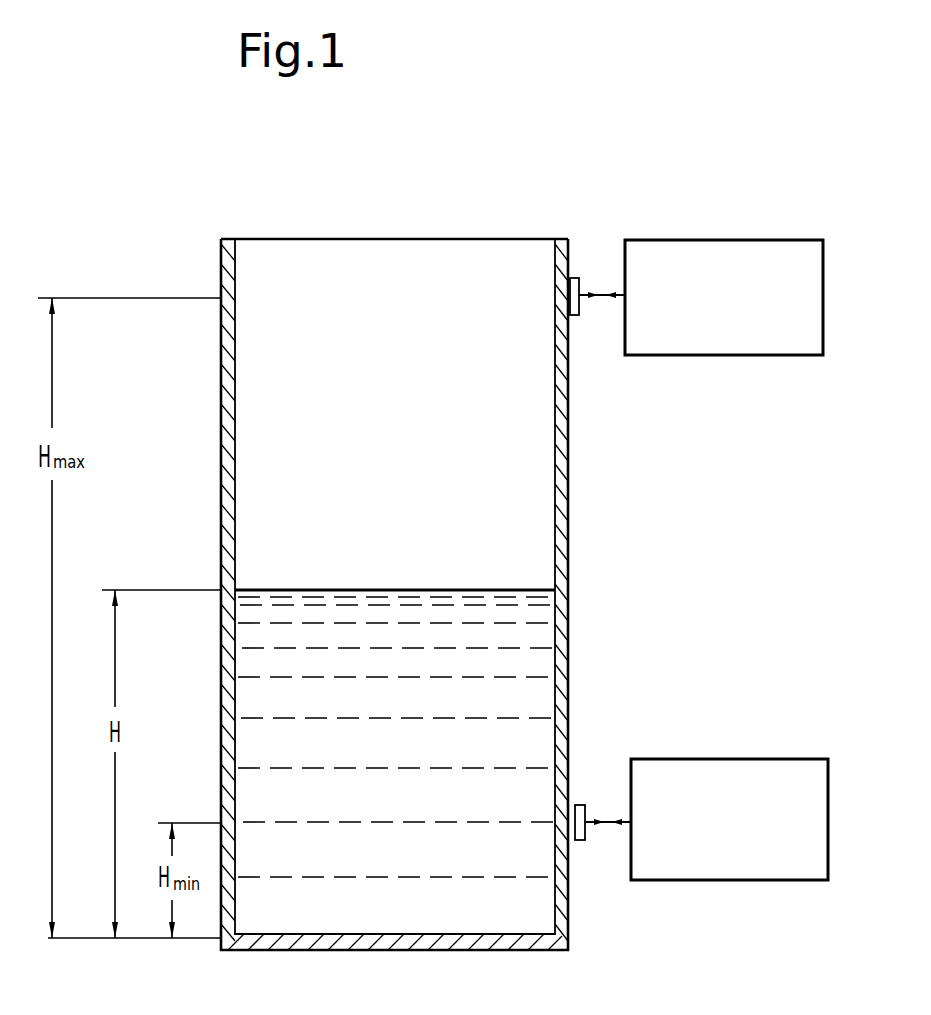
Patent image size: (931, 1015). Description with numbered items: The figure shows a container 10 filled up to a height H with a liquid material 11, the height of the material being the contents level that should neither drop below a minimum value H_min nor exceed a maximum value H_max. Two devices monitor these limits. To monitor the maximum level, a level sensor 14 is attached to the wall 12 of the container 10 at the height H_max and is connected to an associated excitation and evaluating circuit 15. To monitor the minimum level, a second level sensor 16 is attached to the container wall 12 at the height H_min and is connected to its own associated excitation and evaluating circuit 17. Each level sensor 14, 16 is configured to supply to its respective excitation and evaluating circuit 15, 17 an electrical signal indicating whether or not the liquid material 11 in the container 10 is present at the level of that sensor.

The container 10 is at (283, 249).
The liquid material 11 is at (528, 642).
The wall 12 is at (566, 485).
The level sensor 14 is at (576, 278).
The excitation and evaluating circuit 15 is at (724, 246).
The level sensor 16 is at (582, 805).
The excitation and evaluating circuit 17 is at (750, 762).